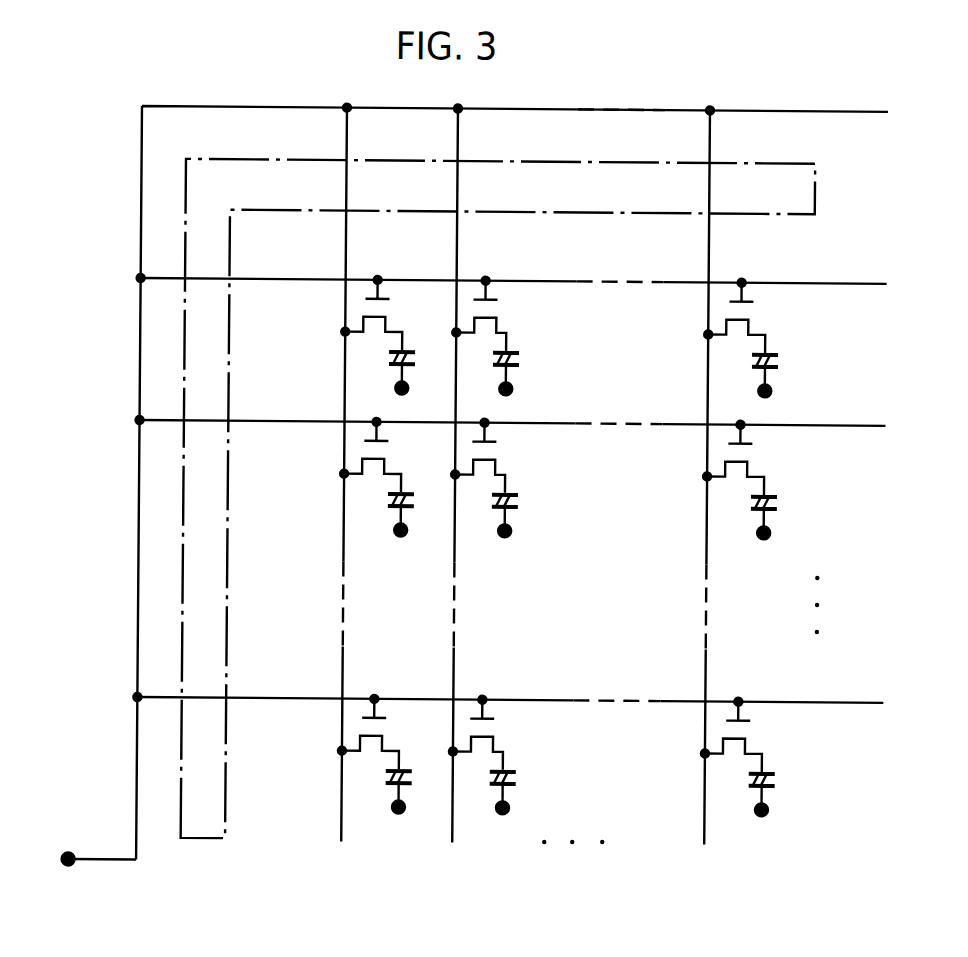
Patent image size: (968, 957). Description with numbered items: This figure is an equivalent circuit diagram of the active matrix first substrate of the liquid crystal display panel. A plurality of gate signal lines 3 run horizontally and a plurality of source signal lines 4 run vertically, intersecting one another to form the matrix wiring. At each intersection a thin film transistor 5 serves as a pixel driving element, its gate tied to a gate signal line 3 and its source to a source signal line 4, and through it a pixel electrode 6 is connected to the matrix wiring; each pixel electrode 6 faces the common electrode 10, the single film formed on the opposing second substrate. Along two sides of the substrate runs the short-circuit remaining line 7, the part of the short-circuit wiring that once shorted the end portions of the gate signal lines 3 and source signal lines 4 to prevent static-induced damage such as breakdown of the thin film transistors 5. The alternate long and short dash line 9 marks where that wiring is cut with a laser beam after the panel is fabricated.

The gate signal line 3 is at (866, 277).
The source signal line 4 is at (344, 818).
The thin film transistor 5 is at (392, 303).
The pixel electrode 6 is at (417, 348).
The short-circuit remaining line 7 is at (140, 175).
The alternate long and short dash line 9 is at (211, 844).
The common electrode 10 is at (407, 388).